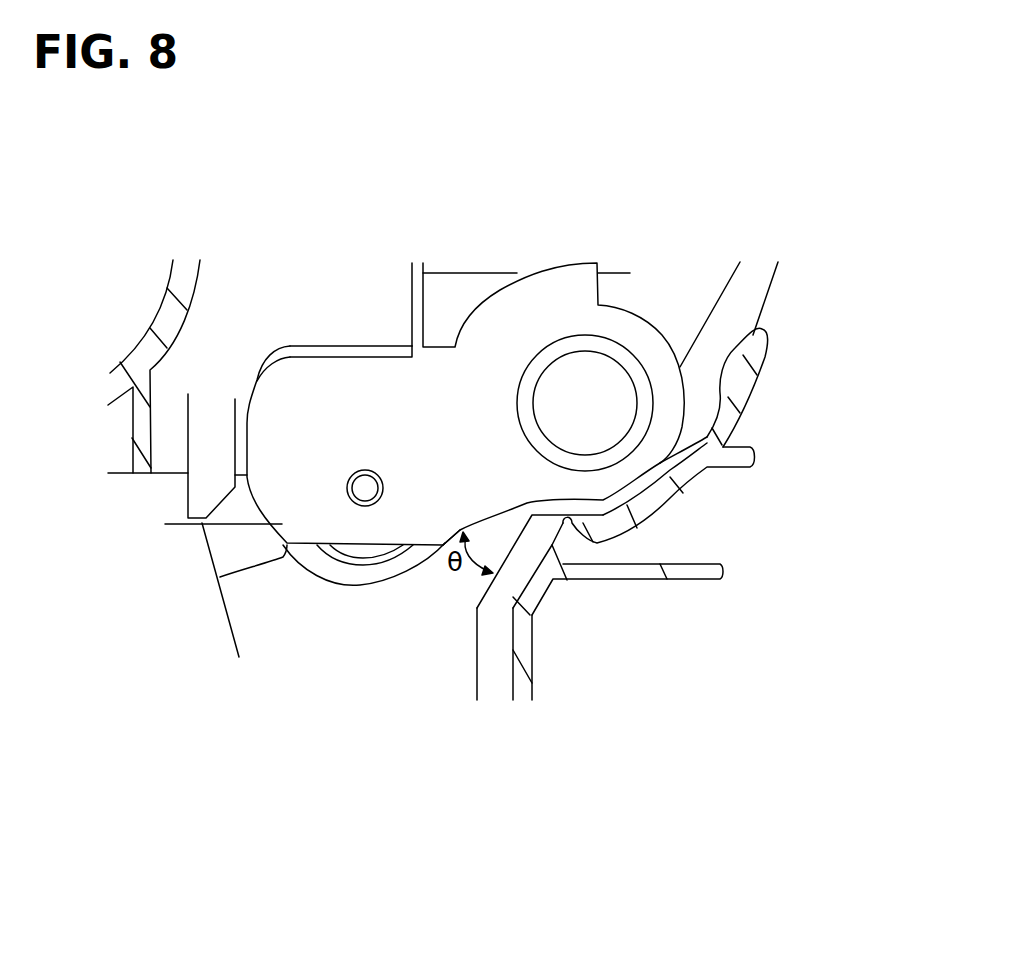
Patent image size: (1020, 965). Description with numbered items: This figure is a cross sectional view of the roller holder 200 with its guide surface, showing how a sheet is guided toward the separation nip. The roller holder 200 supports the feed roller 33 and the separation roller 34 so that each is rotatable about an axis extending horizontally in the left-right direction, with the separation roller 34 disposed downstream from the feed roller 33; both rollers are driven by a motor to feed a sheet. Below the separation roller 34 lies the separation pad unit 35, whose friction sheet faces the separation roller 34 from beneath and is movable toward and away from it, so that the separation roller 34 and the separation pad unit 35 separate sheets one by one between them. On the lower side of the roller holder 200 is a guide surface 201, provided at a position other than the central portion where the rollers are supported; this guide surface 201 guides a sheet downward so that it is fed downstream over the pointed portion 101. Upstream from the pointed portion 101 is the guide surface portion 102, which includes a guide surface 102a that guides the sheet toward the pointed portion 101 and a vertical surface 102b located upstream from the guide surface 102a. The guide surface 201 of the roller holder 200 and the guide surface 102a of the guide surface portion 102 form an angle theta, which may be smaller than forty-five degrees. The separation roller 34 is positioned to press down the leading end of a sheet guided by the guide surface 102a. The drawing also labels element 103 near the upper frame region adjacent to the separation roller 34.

The roller holder 200 is at (320, 395).
The guide surface 201 is at (478, 520).
The feed roller 33 is at (305, 550).
The separation roller 34 is at (687, 492).
The separation pad unit 35 is at (660, 503).
The pointed portion 101 is at (583, 525).
The guide surface portion 102 is at (409, 713).
The guide surface 102a is at (476, 650).
The vertical surface 102b is at (478, 660).
The upper frame portion 103 is at (735, 347).